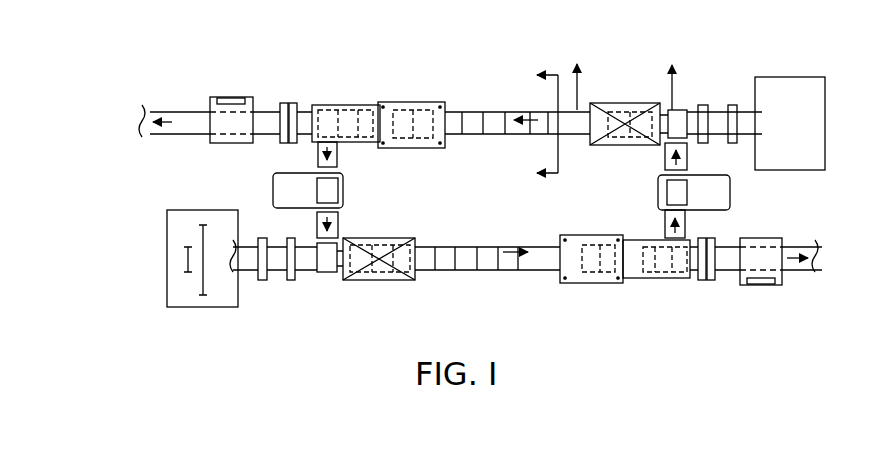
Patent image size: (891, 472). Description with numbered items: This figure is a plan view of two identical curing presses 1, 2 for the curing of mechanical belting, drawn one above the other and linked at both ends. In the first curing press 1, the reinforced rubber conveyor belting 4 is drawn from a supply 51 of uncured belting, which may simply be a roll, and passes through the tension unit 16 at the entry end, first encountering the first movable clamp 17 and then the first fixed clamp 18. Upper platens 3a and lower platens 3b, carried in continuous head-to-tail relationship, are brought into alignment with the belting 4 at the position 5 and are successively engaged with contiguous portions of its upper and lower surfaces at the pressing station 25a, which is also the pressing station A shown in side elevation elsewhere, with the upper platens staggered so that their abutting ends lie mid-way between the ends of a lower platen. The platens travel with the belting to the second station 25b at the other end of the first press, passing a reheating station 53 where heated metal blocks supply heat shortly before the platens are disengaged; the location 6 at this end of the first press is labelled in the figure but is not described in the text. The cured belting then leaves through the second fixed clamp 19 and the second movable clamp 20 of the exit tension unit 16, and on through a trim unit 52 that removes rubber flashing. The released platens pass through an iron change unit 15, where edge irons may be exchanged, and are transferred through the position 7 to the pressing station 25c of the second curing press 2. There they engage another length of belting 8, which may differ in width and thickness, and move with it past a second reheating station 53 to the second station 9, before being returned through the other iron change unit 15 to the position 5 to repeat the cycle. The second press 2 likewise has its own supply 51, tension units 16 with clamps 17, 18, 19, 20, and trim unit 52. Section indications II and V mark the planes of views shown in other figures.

The first curing press 1 is at (135, 122).
The second curing press 2 is at (825, 258).
The upper platens 3a is at (494, 213).
The lower platens 3b is at (462, 136).
The length of belting 4 is at (180, 135).
The platen alignment position 5 is at (682, 108).
The gear unit 6 is at (303, 147).
The platen transfer position 7 is at (333, 277).
The another length of belting 8 is at (306, 270).
The second station of the second curing press 9 is at (676, 282).
The iron change unit 15 is at (282, 192).
The tension unit 16 is at (300, 104).
The first movable clamp 17 is at (735, 143).
The first fixed clamp 18 is at (290, 238).
The second fixed clamp 19 is at (290, 103).
The second movable clamp 20 is at (282, 103).
The pressing station 25a is at (608, 146).
The second station 25b is at (332, 112).
The pressing station 25c is at (395, 280).
The supply of uncured belting 51 is at (810, 170).
The trim unit 52 is at (210, 100).
The reheating station 53 is at (433, 102).
The pressing station A is at (631, 149).
The section line II is at (536, 127).
The section line V is at (565, 33).